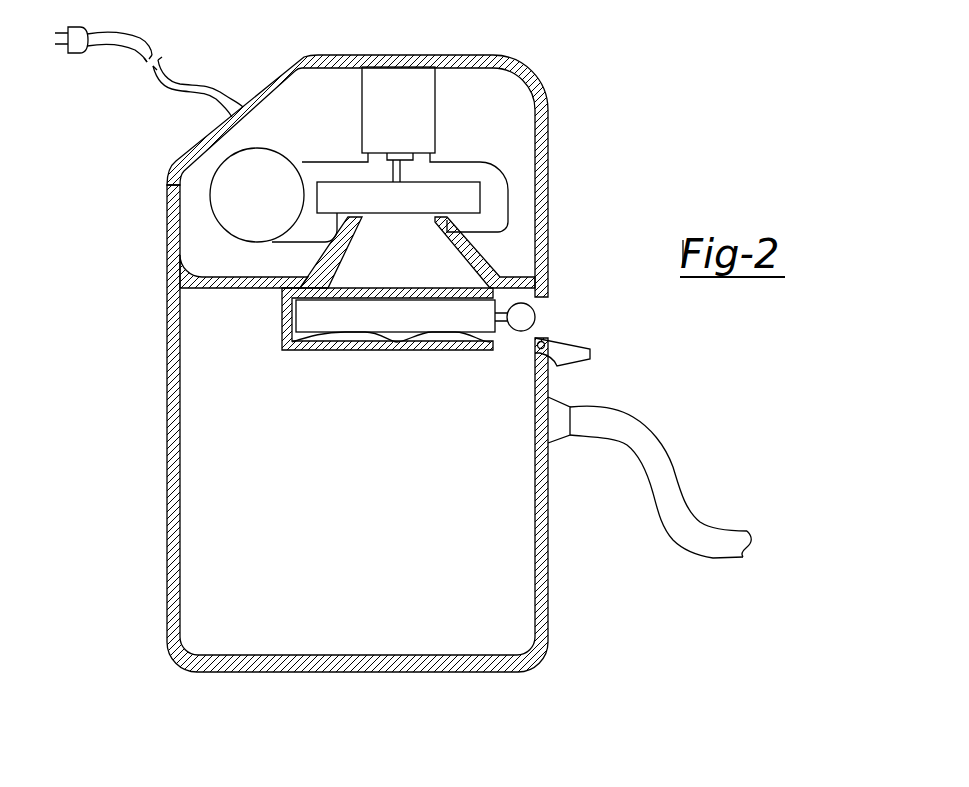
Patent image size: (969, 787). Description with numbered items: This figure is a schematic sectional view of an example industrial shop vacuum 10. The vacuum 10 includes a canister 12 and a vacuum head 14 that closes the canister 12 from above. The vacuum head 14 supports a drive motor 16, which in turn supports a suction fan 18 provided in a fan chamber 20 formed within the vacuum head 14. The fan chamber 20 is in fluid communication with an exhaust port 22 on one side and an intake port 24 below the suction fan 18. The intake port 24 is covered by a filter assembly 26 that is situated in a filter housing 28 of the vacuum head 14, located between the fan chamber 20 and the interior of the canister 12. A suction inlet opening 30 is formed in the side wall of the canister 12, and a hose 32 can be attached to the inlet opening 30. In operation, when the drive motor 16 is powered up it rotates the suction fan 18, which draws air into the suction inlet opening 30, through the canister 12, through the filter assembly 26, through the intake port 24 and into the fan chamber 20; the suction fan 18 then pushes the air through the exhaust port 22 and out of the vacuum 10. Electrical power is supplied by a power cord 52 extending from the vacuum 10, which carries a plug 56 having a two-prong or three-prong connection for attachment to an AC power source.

The vacuum 10 is at (606, 90).
The canister 12 is at (547, 580).
The vacuum head 14 is at (548, 233).
The drive motor 16 is at (361, 95).
The suction fan 18 is at (458, 182).
The fan chamber 20 is at (510, 190).
The exhaust port 22 is at (210, 198).
The intake port 24 is at (470, 262).
The filter assembly 26 is at (273, 512).
The filter housing 28 is at (282, 302).
The suction inlet opening 30 is at (551, 442).
The hose 32 is at (676, 462).
The power cord 52 is at (207, 83).
The plug 56 is at (74, 53).